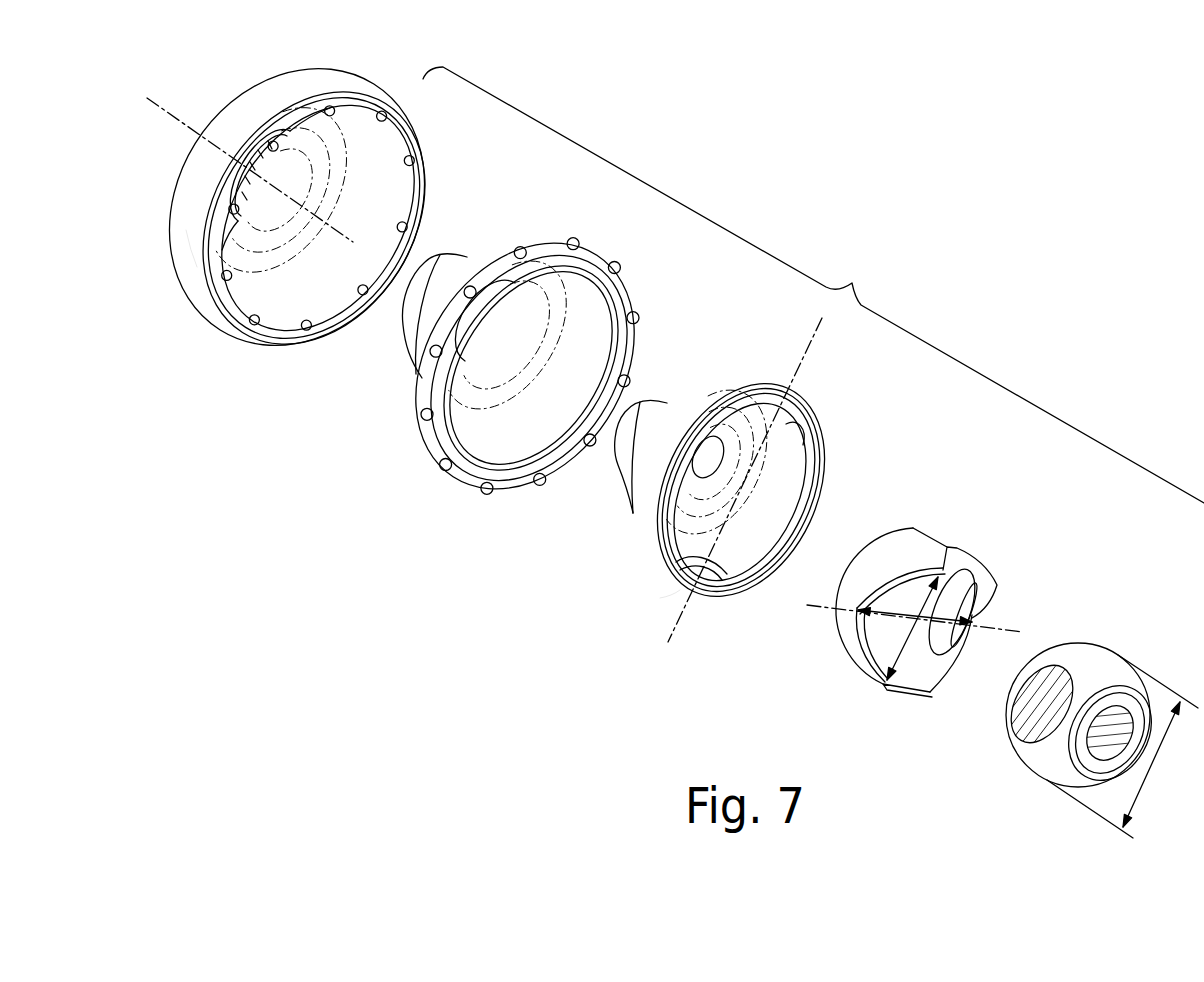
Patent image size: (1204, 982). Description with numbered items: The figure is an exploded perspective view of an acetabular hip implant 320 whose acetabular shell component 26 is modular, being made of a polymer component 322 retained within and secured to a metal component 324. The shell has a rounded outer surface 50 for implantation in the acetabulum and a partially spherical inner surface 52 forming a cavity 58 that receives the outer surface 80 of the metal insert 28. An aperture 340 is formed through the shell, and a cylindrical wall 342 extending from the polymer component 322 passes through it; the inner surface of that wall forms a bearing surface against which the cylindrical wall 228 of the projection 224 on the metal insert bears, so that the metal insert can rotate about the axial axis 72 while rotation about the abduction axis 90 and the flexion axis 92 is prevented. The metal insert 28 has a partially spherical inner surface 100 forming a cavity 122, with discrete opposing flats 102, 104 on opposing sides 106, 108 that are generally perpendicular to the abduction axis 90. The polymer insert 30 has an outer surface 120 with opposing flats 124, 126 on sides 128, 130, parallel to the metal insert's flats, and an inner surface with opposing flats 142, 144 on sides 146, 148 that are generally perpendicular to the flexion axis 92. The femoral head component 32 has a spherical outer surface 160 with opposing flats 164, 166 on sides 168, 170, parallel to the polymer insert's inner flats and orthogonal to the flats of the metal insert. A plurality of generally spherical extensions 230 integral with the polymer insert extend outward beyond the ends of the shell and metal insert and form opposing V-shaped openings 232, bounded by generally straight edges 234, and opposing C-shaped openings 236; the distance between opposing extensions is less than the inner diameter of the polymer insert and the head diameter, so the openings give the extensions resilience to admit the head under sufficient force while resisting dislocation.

The acetabular shell component 26 is at (353, 86).
The metal insert 28 is at (737, 393).
The polymer insert 30 is at (911, 609).
The femoral head component 32 is at (1083, 708).
The outer surface 50 is at (296, 206).
The inner surface 52 is at (360, 150).
The cavity 58 is at (372, 190).
The axial axis 72 is at (190, 128).
The outer surface 80 is at (724, 492).
The abduction axis 90 is at (812, 337).
The flexion axis 92 is at (1010, 632).
The inner surface 100 is at (792, 482).
The flat 102 is at (713, 574).
The flat 104 is at (802, 438).
The side 106 is at (677, 592).
The side 108 is at (800, 406).
The outer surface 120 is at (912, 532).
The cavity 122 is at (764, 544).
The flat 124 is at (900, 695).
The flat 126 is at (965, 560).
The side 128 is at (880, 690).
The side 130 is at (948, 547).
The flat 142 is at (858, 655).
The flat 144 is at (1000, 605).
The side 146 is at (845, 615).
The side 148 is at (985, 622).
The outer surface 160 is at (1095, 650).
The flat 164 is at (1020, 720).
The flat 166 is at (1104, 691).
The side 168 is at (1065, 655).
The side 170 is at (1125, 655).
The projection 224 is at (624, 438).
The cylindrical wall 228 is at (655, 405).
The extension 230 is at (900, 560).
The V-shaped opening 232 is at (855, 605).
The straight edge 234 is at (880, 575).
The C-shaped opening 236 is at (990, 560).
The acetabular hip implant 320 is at (813, 285).
The polymer component 322 is at (525, 366).
The metal component 324 is at (197, 267).
The aperture 340 is at (250, 177).
The cylindrical wall 342 is at (448, 262).